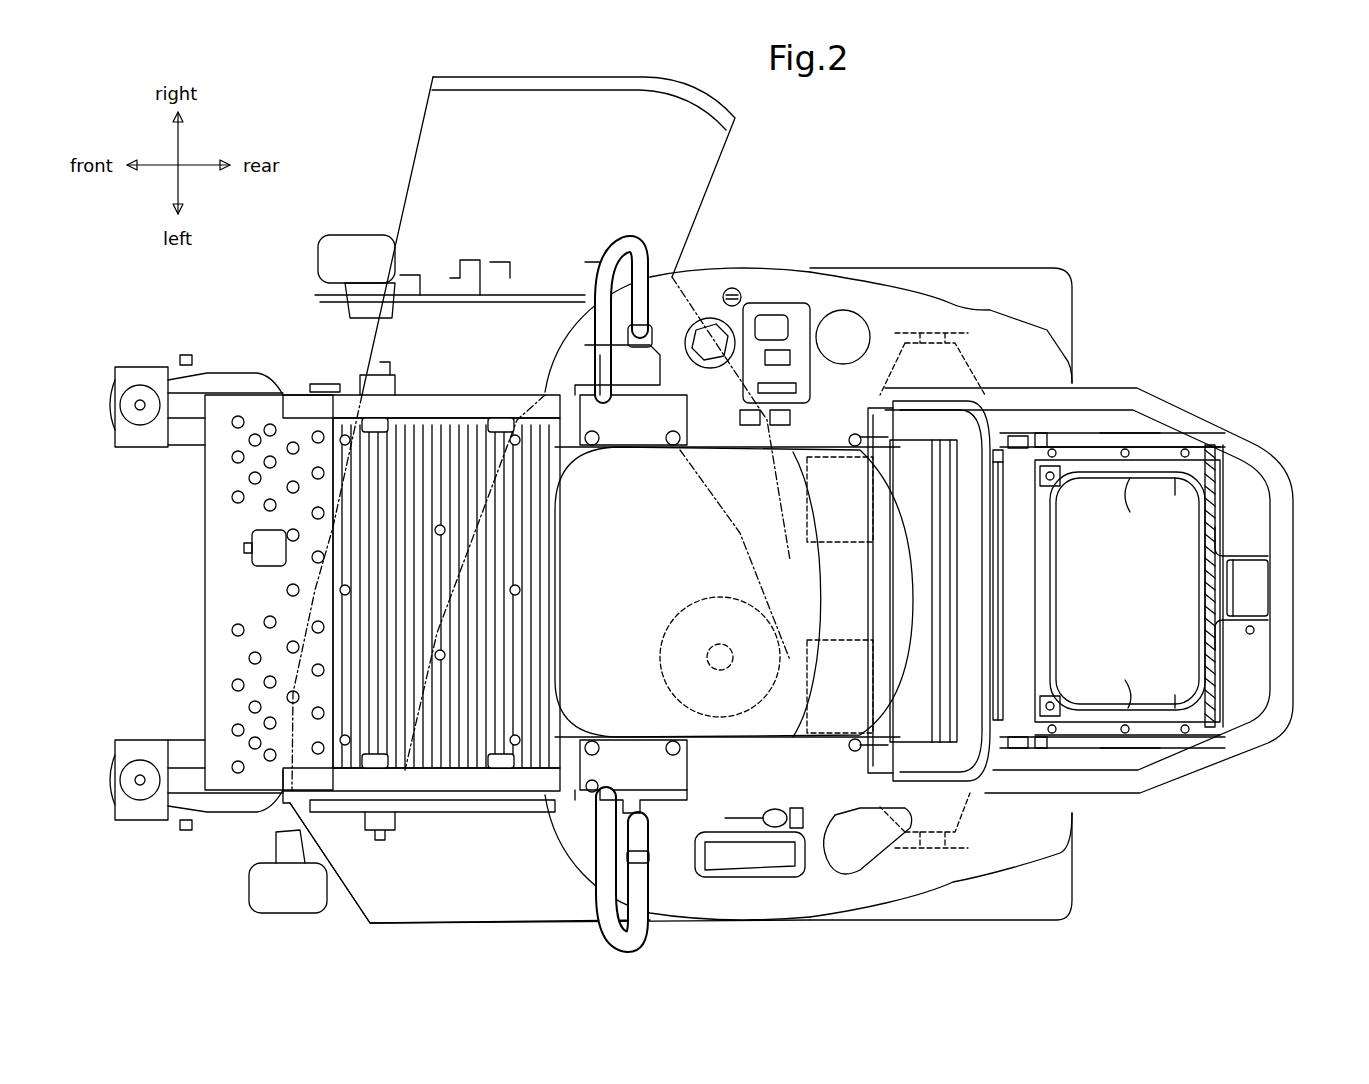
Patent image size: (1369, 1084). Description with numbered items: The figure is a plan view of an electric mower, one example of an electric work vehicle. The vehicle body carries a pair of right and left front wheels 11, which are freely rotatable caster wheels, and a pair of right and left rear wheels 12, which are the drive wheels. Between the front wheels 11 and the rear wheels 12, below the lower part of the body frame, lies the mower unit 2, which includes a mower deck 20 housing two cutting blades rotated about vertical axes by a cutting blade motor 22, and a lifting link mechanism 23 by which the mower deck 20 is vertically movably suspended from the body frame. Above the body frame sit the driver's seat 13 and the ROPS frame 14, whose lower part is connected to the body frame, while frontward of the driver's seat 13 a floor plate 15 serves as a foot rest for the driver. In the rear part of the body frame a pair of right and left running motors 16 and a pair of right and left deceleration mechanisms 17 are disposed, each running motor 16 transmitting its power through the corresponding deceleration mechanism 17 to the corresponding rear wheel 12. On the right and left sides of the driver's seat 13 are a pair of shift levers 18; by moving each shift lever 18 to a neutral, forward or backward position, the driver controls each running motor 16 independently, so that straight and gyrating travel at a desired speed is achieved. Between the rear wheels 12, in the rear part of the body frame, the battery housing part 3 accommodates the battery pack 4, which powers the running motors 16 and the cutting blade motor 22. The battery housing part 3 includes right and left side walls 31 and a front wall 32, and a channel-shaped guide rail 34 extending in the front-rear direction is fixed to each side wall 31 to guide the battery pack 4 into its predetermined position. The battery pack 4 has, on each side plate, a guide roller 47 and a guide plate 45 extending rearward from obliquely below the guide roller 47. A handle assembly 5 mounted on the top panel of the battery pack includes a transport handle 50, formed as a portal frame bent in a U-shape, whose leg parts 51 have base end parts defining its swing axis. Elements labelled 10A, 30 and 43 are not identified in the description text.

The mower unit 2 is at (362, 912).
The battery housing part 3 is at (1070, 425).
The battery pack 4 is at (1242, 483).
The handle assembly 5 is at (1012, 575).
The cooling unit 10A is at (470, 400).
The front wheels 11 is at (218, 385).
The rear wheels 12 is at (1003, 270).
The driver's seat 13 is at (710, 470).
The ROPS frame 14 is at (967, 403).
The floor plate 15 is at (283, 440).
The running motors 16 is at (802, 515).
The deceleration mechanisms 17 is at (905, 390).
The shift levers 18 is at (618, 255).
The mower deck 20 is at (470, 910).
The cutting blade motor 22 is at (688, 606).
The lifting link mechanism 23 is at (420, 832).
The protection frame 30 is at (1180, 400).
The side walls 31 is at (1163, 430).
The front wall 32 is at (1035, 615).
The guide rail 34 is at (1042, 433).
The holder 43 is at (1270, 590).
The guide plate 45 is at (1125, 425).
The guide roller 47 is at (1005, 437).
The transport handle 50 is at (1020, 635).
The leg parts 51 is at (1130, 478).